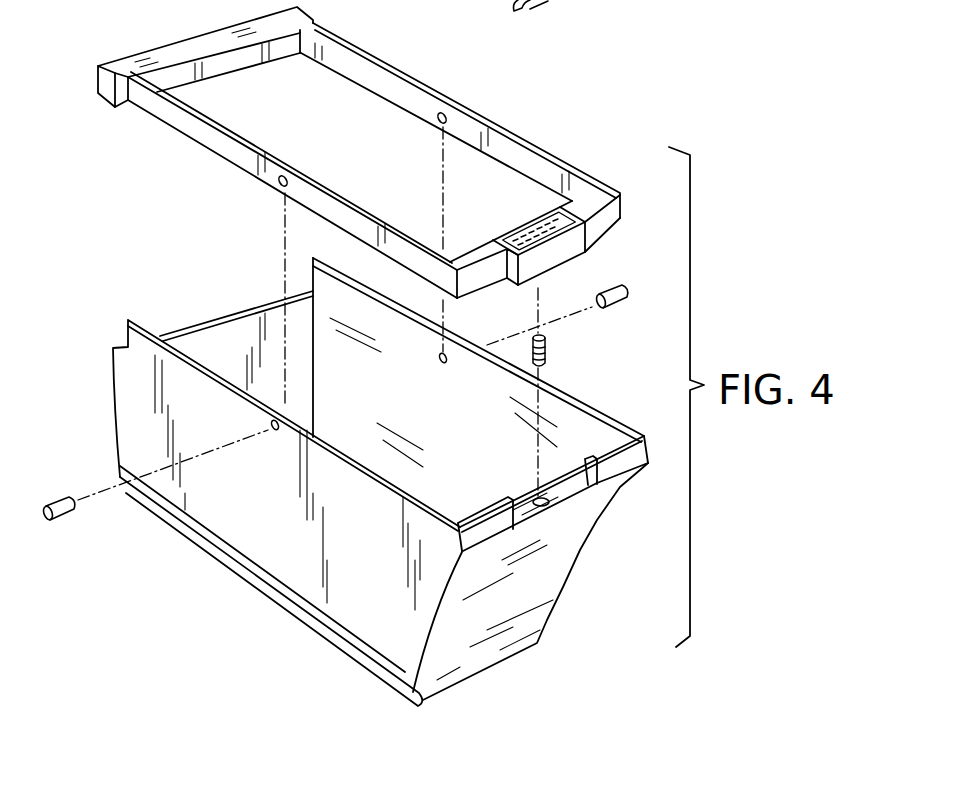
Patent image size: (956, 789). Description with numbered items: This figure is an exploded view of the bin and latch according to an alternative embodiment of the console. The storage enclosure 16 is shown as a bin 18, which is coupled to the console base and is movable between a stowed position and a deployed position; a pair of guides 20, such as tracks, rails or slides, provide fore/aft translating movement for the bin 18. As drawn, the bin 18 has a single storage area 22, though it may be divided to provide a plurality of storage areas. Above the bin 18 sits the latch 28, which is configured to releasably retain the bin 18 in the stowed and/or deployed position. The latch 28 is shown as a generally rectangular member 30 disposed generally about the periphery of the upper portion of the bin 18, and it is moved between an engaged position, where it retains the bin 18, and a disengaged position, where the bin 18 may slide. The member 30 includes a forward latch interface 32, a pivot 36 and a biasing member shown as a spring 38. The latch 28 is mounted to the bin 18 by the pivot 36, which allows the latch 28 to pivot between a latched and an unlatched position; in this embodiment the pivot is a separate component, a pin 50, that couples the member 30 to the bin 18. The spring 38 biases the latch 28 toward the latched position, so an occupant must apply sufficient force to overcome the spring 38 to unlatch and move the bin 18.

The storage enclosure 16 is at (593, 615).
The bin 18 is at (277, 548).
The guides 20 is at (337, 647).
The storage area 22 is at (230, 355).
The latch 28 is at (188, 145).
The member 30 is at (512, 132).
The forward latch interface 32 is at (190, 48).
The pivot 36 is at (439, 115).
The spring 38 is at (546, 343).
The pin 50 is at (614, 304).